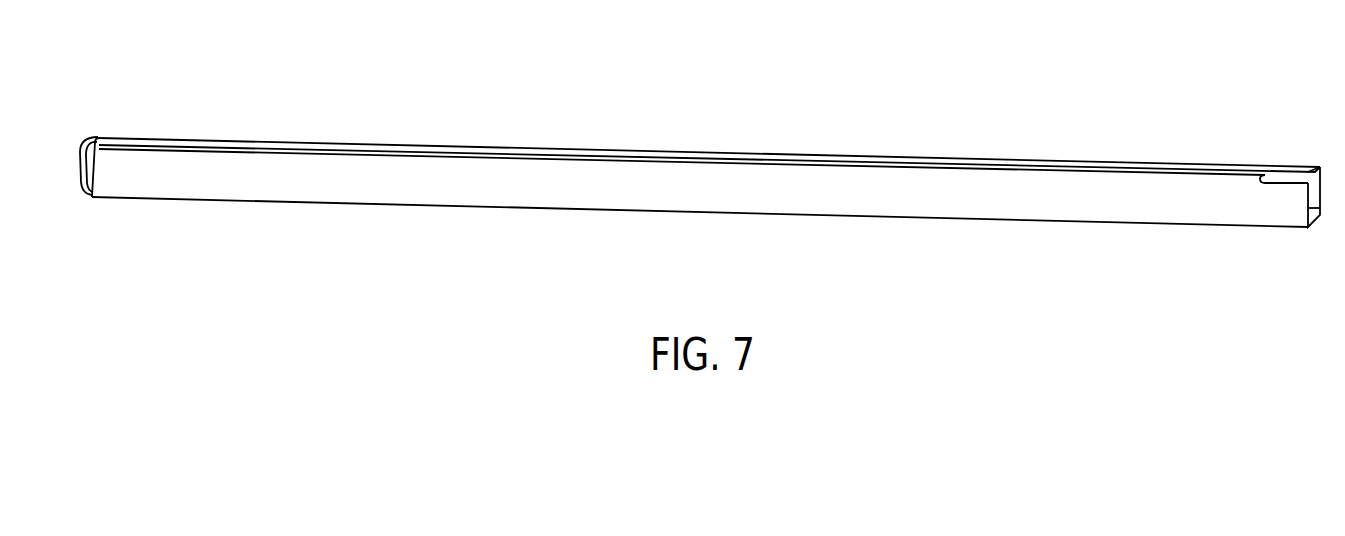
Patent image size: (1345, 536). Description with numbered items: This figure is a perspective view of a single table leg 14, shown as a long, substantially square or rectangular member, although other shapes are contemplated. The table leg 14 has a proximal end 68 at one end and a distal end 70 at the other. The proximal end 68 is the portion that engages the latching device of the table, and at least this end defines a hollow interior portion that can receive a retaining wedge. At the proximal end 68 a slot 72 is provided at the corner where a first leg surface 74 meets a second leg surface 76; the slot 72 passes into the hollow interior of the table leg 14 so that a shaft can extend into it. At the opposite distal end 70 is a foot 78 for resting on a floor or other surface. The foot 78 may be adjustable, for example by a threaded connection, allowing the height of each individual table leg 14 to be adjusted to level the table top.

The table leg 14 is at (609, 105).
The proximal end 68 is at (1292, 233).
The distal end 70 is at (135, 133).
The slot 72 is at (1289, 168).
The first leg surface 74 is at (1305, 168).
The second leg surface 76 is at (1275, 208).
The foot 78 is at (91, 140).